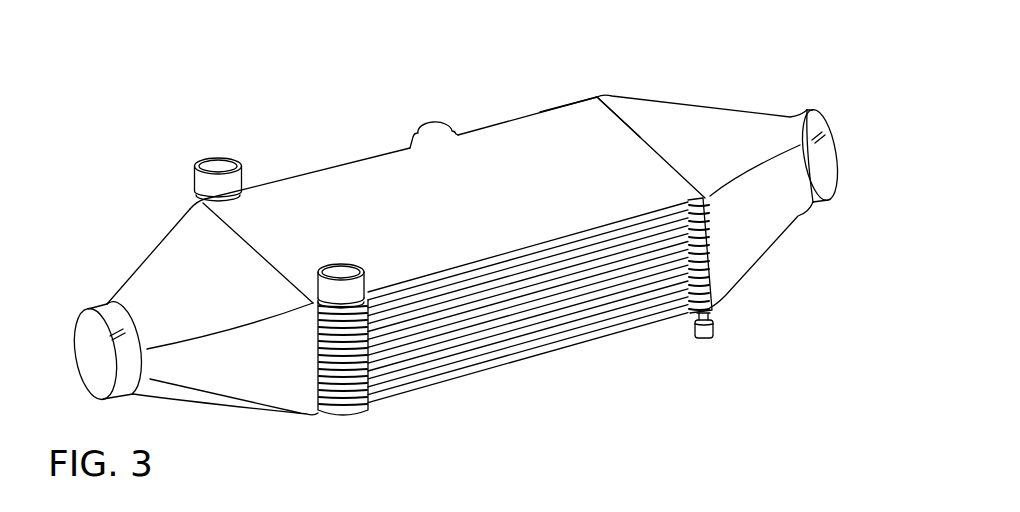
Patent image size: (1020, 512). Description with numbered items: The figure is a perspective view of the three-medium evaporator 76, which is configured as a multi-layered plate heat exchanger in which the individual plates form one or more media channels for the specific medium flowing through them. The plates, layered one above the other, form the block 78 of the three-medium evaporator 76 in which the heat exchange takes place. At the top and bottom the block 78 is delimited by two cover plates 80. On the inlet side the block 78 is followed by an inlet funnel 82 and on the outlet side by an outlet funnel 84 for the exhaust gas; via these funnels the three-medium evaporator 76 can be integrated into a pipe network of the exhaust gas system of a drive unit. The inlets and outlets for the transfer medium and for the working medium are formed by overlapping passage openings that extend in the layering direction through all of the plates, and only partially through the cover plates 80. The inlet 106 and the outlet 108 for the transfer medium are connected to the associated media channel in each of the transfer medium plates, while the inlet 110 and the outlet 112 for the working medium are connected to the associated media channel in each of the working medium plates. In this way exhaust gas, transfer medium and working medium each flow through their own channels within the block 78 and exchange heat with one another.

The three-medium evaporator 76 is at (455, 213).
The block 78 is at (447, 122).
The cover plates 80 is at (560, 123).
The inlet funnel 82 is at (160, 276).
The outlet funnel 84 is at (745, 125).
The inlet for the transfer medium 106 is at (422, 125).
The outlet for the transfer medium 108 is at (337, 270).
The inlet for the working medium 110 is at (718, 333).
The outlet for the working medium 112 is at (213, 163).